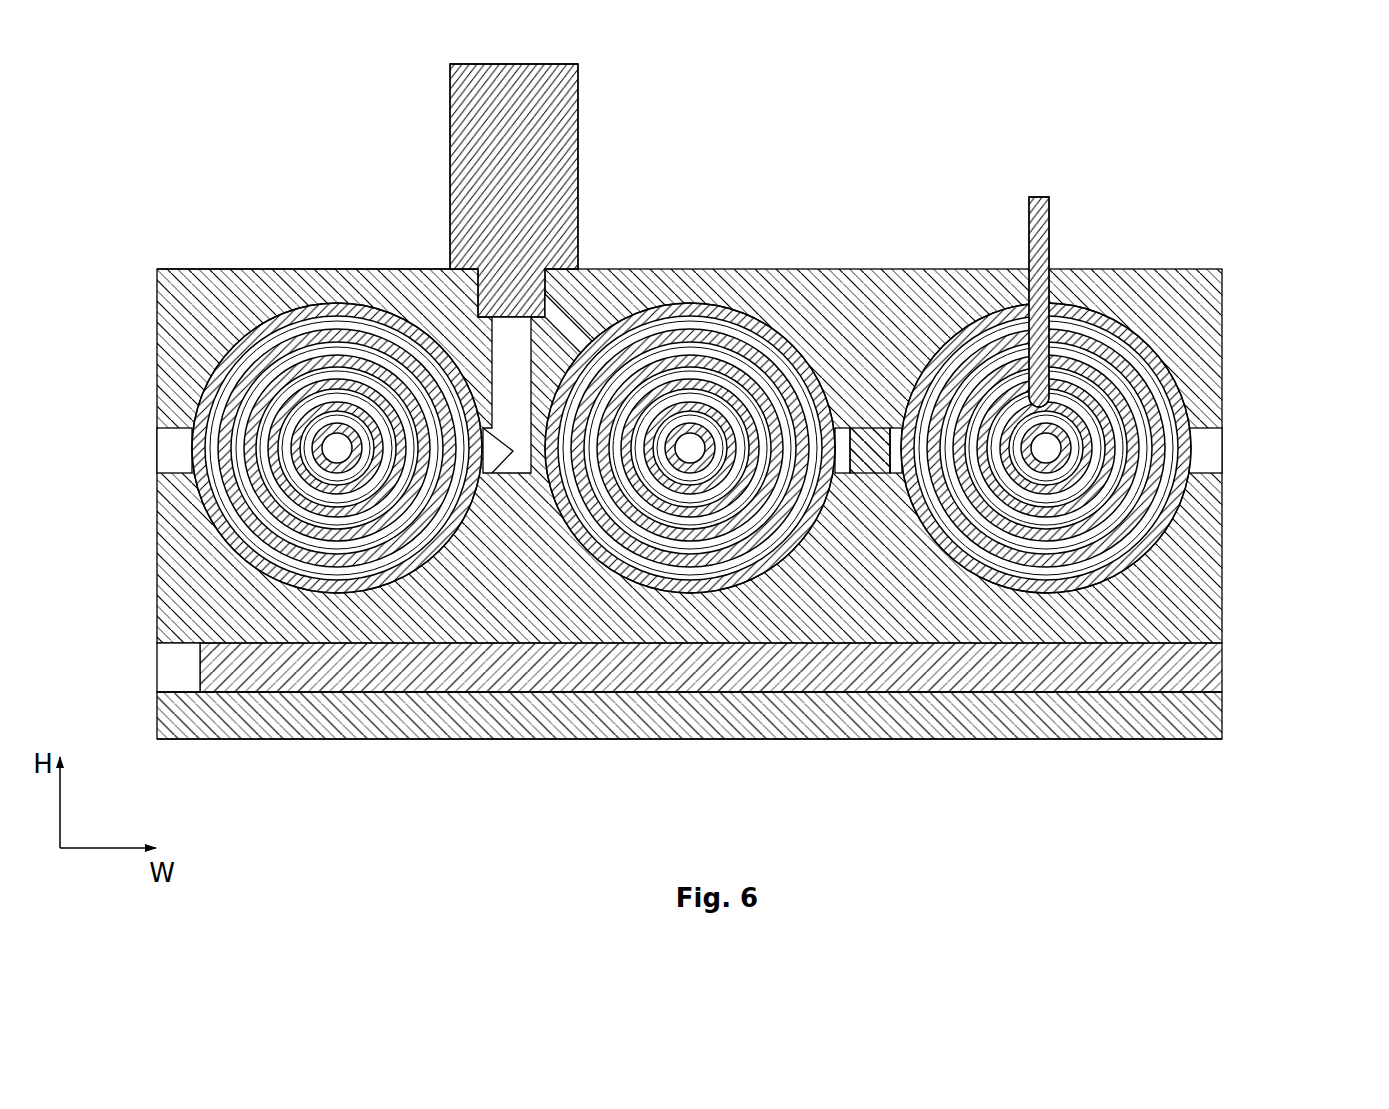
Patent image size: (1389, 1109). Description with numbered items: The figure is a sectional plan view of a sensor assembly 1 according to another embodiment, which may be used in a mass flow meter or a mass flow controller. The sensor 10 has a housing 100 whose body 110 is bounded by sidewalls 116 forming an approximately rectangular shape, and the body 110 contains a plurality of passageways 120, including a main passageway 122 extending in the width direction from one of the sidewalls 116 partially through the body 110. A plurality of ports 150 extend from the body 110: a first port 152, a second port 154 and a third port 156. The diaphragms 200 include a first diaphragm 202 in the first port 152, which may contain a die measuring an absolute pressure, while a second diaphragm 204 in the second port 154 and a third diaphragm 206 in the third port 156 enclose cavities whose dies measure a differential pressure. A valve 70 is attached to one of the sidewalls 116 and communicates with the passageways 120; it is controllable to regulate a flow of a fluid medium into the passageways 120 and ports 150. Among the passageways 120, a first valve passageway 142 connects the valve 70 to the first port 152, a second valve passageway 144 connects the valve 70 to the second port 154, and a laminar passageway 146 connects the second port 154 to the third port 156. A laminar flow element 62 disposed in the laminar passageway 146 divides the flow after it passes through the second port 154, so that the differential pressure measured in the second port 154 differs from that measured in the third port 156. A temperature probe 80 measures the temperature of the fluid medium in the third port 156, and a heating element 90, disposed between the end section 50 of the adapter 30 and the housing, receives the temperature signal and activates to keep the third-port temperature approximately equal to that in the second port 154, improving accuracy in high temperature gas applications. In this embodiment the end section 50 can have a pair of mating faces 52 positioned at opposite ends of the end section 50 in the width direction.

The sensor assembly 1 is at (143, 140).
The sensor 10 is at (689, 423).
The housing 100 is at (156, 386).
The body 110 is at (1226, 571).
The sidewalls 116 is at (240, 269).
The passageways 120 is at (698, 465).
The main passageway 122 is at (156, 461).
The adapter 30 is at (156, 669).
The end section 50 is at (689, 743).
The mating face 52 is at (158, 721).
The heating element 90 is at (1176, 716).
The valve 70 is at (411, 214).
The first valve passageway 142 is at (489, 348).
The second valve passageway 144 is at (584, 306).
The laminar passageway 146 is at (891, 426).
The laminar flow element 62 is at (866, 439).
The temperature probe 80 is at (1052, 206).
The ports 150 is at (691, 544).
The first port 152 is at (316, 600).
The second port 154 is at (686, 600).
The third port 156 is at (1024, 600).
The diaphragms 200 is at (622, 403).
The first diaphragm 202 is at (290, 386).
The second diaphragm 204 is at (640, 386).
The third diaphragm 206 is at (1095, 390).